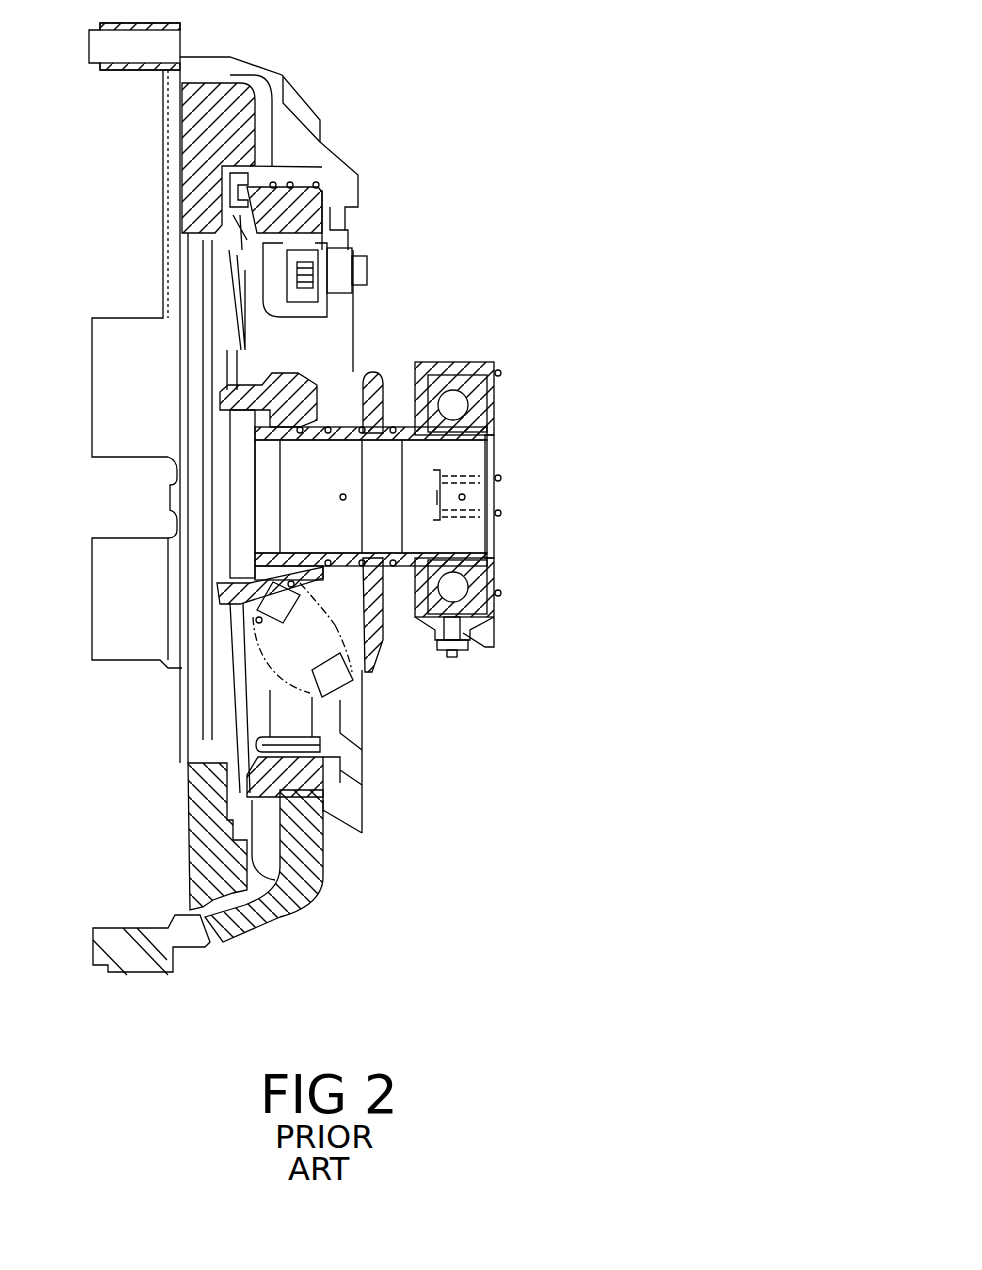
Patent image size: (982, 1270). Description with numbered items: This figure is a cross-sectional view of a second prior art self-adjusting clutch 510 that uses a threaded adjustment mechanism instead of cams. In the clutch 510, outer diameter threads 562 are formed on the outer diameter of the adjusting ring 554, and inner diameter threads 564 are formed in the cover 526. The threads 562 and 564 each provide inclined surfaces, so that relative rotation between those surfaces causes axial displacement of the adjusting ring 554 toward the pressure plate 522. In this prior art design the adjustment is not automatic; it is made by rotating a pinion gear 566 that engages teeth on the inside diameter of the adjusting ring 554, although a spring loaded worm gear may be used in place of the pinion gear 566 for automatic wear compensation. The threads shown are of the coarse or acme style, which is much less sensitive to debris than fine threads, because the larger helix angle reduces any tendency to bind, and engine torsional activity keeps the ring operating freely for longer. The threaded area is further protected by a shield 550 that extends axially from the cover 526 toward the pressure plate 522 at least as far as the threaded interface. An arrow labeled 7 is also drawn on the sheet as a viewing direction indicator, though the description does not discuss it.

The clutch 510 is at (500, 85).
The pressure plate 522 is at (183, 160).
The cover 526 is at (287, 927).
The shield 550 is at (287, 727).
The adjusting ring 554 is at (250, 800).
The outer diameter threads 562 is at (360, 836).
The inner diameter threads 564 is at (323, 792).
The pinion gear 566 is at (307, 303).
The view direction arrow 7 is at (575, 494).